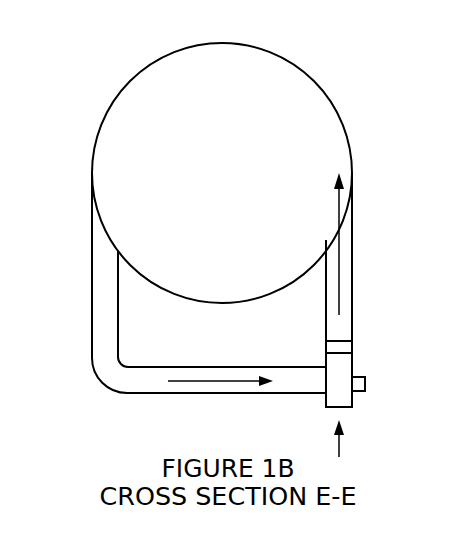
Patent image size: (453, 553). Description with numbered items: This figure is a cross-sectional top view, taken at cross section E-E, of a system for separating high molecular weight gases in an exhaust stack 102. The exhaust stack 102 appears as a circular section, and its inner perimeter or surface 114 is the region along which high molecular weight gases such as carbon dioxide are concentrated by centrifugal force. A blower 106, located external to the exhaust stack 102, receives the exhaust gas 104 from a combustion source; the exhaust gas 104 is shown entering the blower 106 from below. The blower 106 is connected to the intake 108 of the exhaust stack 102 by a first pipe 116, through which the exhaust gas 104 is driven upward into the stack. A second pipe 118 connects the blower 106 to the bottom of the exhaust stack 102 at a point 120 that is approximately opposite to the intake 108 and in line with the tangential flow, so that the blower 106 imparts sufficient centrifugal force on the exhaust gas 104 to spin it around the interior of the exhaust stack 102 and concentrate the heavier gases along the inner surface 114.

The exhaust stack 102 is at (325, 92).
The exhaust gas 104 is at (364, 438).
The blower 106 is at (344, 380).
The intake 108 is at (332, 242).
The inner perimeter or surface 114 is at (300, 74).
The first pipe 116 is at (345, 275).
The second pipe 118 is at (97, 275).
The point 120 is at (114, 243).